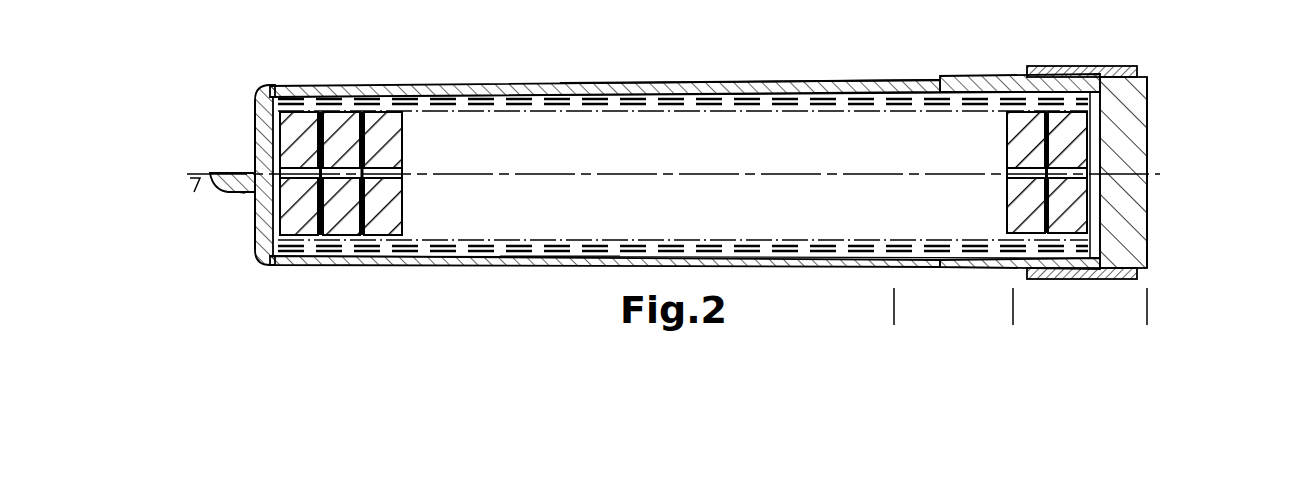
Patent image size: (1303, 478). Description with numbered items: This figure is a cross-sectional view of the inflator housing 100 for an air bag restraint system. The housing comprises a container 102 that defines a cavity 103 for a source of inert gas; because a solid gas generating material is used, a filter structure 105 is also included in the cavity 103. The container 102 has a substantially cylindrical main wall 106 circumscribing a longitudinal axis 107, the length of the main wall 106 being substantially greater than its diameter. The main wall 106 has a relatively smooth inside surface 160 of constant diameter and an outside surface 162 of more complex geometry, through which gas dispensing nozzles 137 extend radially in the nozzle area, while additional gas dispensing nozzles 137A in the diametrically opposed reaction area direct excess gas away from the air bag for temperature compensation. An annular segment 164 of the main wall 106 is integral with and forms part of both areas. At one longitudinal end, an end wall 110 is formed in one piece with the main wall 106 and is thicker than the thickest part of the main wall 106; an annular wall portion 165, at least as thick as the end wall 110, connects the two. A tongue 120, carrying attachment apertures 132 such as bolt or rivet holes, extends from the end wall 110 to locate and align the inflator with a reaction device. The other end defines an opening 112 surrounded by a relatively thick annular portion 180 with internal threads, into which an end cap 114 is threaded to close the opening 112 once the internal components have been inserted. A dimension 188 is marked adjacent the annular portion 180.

The inflator housing 100 is at (758, 283).
The container 102 is at (343, 86).
The cavity 103 is at (538, 146).
The filter structure 105 is at (610, 244).
The main wall 106 is at (645, 84).
The longitudinal axis 107 is at (190, 198).
The end wall 110 is at (252, 122).
The opening 112 is at (1165, 102).
The end cap 114 is at (1133, 143).
The tongue 120 is at (218, 176).
The attachment apertures 132 is at (238, 192).
The gas dispensing nozzles 137 is at (413, 84).
The additional gas dispensing nozzles 137A is at (492, 247).
The inside surface 160 is at (768, 100).
The outside surface 162 is at (898, 80).
The annular segment 164 is at (1013, 74).
The annular wall portion 165 is at (258, 86).
The annular portion 180 is at (1147, 312).
The intermediate section length 188 is at (1013, 312).